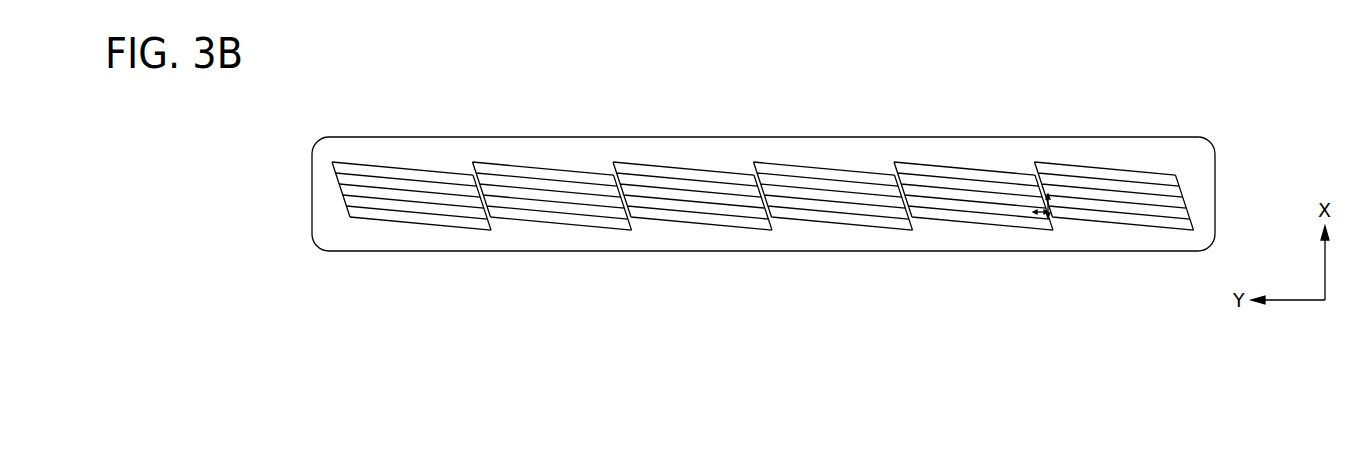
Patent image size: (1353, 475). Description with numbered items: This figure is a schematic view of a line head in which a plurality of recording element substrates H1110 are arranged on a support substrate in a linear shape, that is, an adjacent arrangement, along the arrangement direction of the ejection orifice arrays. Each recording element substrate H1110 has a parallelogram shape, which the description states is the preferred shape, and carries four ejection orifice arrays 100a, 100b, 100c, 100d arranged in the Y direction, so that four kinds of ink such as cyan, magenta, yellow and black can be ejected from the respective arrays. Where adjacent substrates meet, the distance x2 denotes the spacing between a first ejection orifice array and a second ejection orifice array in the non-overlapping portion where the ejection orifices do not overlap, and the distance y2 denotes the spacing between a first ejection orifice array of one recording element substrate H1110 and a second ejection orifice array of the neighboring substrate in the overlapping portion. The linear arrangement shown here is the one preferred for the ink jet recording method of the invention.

The recording element substrate H1110 is at (352, 162).
The ejection orifice array 100a is at (373, 209).
The ejection orifice array 100b is at (472, 208).
The ejection orifice array 100c is at (460, 190).
The ejection orifice array 100d is at (412, 178).
The distance between first and second ejection orifice arrays in non-overlapping por x2 is at (1036, 212).
The distance between ejection orifice arrays of adjacent substrates in overlapping p y2 is at (1049, 210).